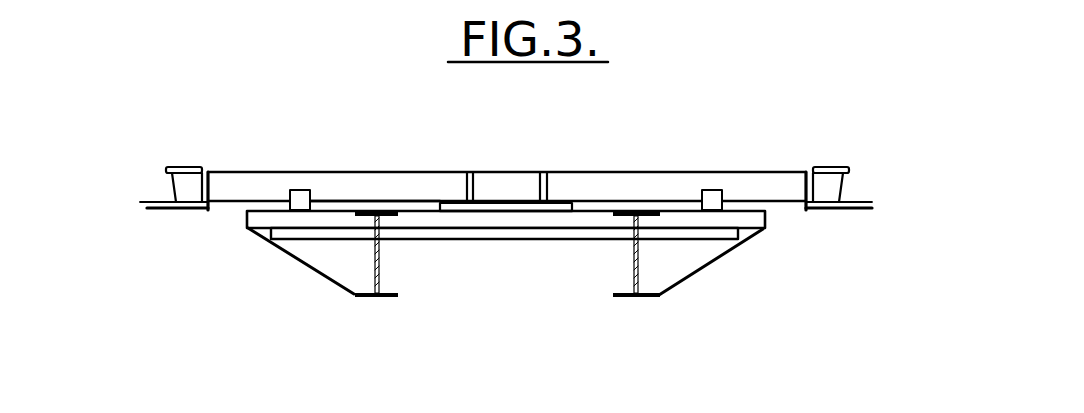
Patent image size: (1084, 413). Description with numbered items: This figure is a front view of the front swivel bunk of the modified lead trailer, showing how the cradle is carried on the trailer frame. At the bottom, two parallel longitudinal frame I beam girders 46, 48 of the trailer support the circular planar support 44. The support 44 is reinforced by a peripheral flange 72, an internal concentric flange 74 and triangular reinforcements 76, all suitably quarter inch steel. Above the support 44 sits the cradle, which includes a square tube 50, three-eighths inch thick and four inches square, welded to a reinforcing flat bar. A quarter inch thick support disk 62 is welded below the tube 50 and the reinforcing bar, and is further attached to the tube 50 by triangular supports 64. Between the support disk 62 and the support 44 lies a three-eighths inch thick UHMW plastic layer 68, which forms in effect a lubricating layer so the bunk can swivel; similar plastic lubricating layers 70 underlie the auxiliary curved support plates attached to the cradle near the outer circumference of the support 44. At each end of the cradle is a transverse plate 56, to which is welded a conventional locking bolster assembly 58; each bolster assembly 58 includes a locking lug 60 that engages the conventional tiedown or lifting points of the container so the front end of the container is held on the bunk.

The support 44 is at (363, 200).
The longitudinal frame I beam girder 46 is at (380, 279).
The longitudinal frame I beam girder 48 is at (634, 283).
The square tube 50 is at (631, 185).
The transverse plate 56 is at (210, 190).
The locking bolster assembly 58 is at (172, 191).
The locking lug 60 is at (186, 167).
The support disk 62 is at (557, 203).
The triangular support 64 is at (540, 195).
The UHMW plastic layer 68 is at (493, 211).
The plastic lubricating layer 70 is at (299, 190).
The peripheral flange 72 is at (245, 213).
The internal concentric flange 74 is at (588, 239).
The triangular reinforcement 76 is at (703, 267).